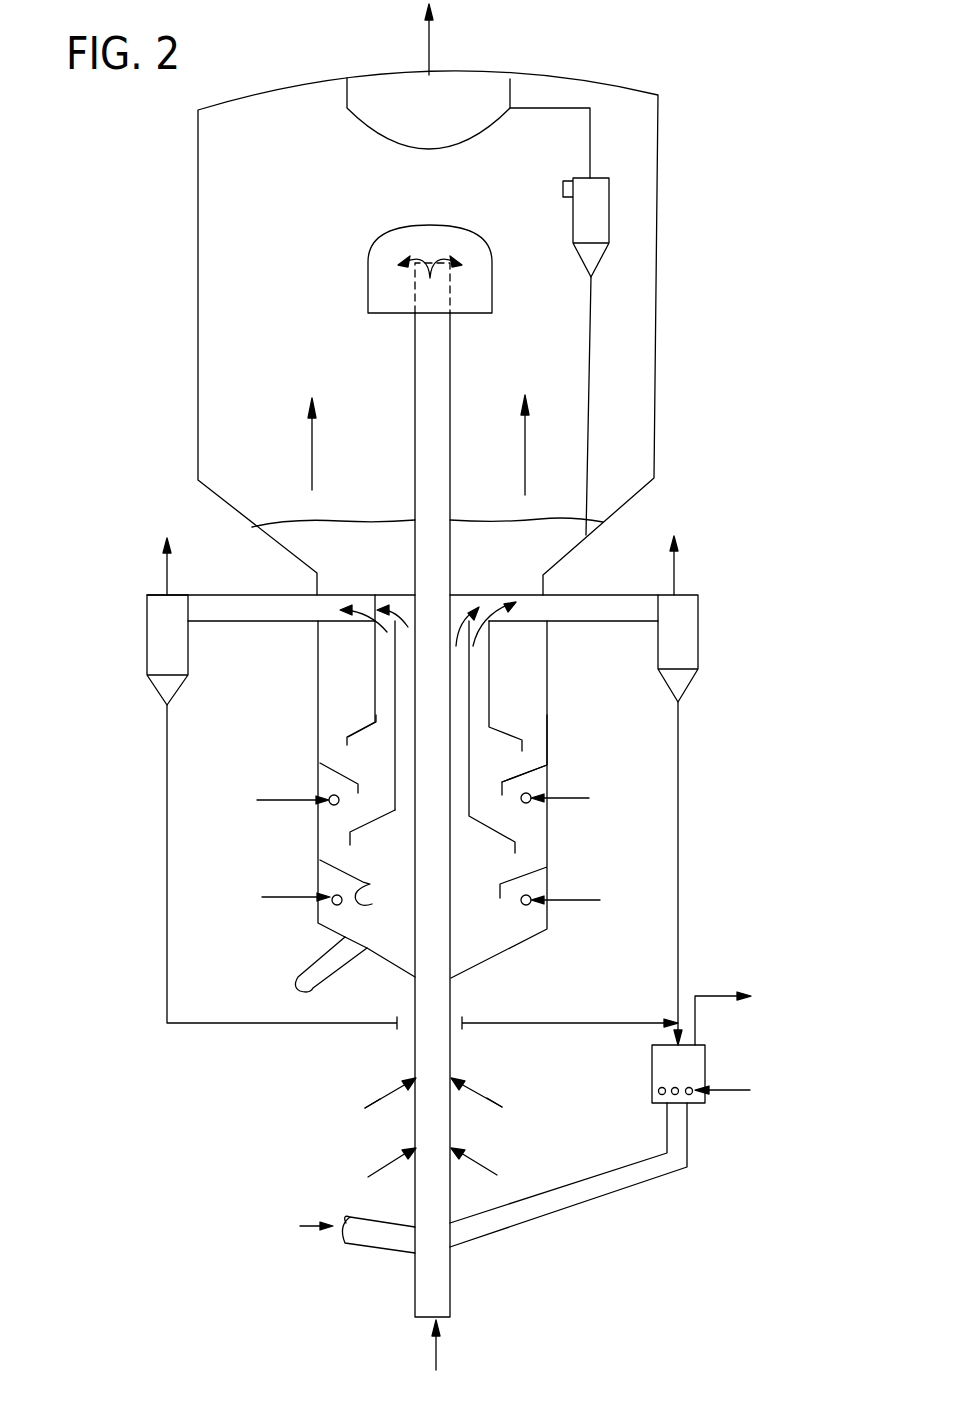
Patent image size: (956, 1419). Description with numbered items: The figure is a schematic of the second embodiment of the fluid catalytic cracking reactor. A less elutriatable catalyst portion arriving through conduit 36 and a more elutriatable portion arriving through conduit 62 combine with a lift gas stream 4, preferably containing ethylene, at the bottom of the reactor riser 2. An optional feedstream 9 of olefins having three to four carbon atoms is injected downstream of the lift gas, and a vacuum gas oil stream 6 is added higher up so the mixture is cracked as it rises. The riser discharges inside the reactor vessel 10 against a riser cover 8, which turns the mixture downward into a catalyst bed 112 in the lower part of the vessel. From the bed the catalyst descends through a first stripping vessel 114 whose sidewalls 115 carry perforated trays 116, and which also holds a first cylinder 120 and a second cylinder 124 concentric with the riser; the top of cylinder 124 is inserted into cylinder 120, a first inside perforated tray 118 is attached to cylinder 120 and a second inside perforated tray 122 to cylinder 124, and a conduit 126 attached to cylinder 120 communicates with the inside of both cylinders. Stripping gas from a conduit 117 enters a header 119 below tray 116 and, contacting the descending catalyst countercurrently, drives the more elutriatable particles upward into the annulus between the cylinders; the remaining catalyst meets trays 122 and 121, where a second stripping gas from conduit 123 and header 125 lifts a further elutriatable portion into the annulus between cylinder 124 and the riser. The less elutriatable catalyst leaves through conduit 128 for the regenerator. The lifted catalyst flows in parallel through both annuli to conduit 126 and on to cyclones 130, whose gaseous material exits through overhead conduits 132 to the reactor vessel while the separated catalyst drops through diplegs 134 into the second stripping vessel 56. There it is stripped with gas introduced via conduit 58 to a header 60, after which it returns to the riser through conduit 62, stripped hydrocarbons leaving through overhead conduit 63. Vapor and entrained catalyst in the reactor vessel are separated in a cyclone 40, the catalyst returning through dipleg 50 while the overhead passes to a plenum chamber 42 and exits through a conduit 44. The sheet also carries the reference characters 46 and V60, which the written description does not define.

The fluid catalytic cracking reactor riser 2 is at (415, 398).
The lift gas stream 4 is at (438, 1345).
The vacuum gas oil stream 6 is at (385, 1097).
The valve V60 is at (437, 1114).
The riser cover 8 is at (395, 232).
The optional feedstream 9 is at (388, 1164).
The reactor vessel 10 is at (198, 321).
The conduit 36 is at (383, 1241).
The cyclone 40 is at (573, 230).
The plenum chamber 42 is at (590, 140).
The conduit 44 is at (348, 110).
The gas outlet 46 is at (436, 43).
The dipleg 50 is at (588, 356).
The second stripping vessel 56 is at (652, 1072).
The conduit 58 is at (728, 1091).
The header 60 is at (691, 1088).
The conduit 62 is at (555, 1206).
The overhead conduit 63 is at (700, 995).
The catalyst bed 112 is at (388, 567).
The first stripping vessel 114 is at (548, 672).
The sidewalls 115 is at (548, 722).
The perforated trays 116 is at (323, 763).
The conduit 117 is at (277, 795).
The first inside perforated tray 118 is at (358, 728).
The header 119 is at (330, 806).
The first cylinder 120 is at (375, 658).
The perforated tray 121 is at (368, 898).
The second inside perforated tray 122 is at (372, 820).
The conduit 123 is at (292, 895).
The second cylinder 124 is at (395, 742).
The header 125 is at (332, 906).
The conduit 126 is at (250, 596).
The conduit 128 is at (302, 974).
The cyclones 130 is at (147, 656).
The overhead conduits 132 is at (167, 576).
The diplegs 134 is at (680, 760).